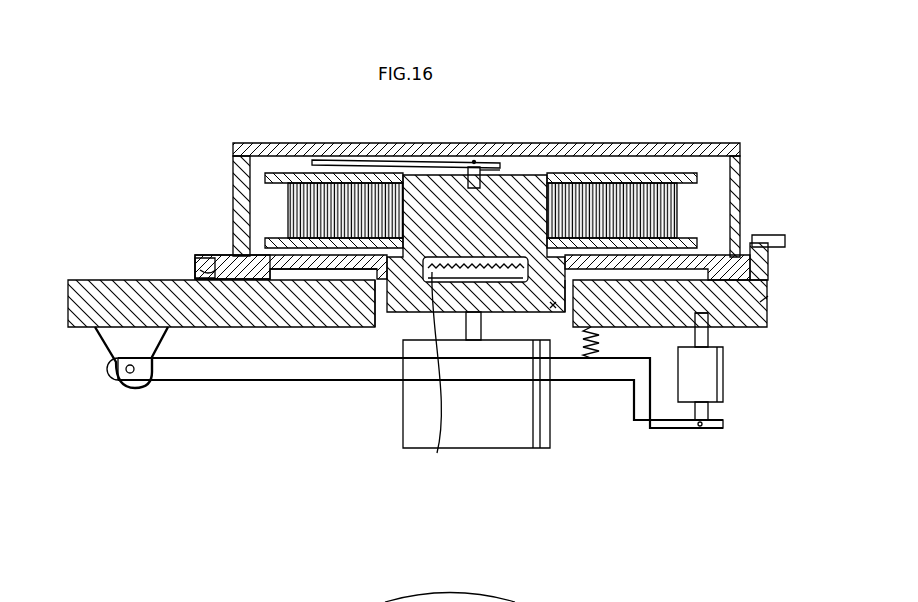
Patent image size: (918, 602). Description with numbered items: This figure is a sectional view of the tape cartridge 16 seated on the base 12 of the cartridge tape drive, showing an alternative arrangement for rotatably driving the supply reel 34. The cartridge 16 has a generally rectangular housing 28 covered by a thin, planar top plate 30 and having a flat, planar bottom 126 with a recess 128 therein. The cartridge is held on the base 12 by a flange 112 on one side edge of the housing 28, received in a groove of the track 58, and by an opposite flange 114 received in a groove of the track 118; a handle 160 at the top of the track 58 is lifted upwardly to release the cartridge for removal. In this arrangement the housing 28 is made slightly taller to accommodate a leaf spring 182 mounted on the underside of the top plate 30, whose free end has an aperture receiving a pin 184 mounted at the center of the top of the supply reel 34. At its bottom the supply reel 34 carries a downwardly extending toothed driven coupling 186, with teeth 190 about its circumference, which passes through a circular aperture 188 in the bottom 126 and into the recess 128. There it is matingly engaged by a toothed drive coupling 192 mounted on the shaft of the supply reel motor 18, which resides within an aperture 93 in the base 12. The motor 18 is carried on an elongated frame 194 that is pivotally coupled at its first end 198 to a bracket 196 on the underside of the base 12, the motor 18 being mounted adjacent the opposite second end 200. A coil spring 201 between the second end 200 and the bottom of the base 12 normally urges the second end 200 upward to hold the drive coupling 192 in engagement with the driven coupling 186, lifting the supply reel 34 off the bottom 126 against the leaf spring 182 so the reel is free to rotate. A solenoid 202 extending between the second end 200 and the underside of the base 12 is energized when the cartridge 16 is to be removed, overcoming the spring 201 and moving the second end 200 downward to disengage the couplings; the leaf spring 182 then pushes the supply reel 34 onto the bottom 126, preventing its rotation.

The base 12 is at (108, 283).
The tape cartridge 16 is at (485, 187).
The supply reel motor 18 is at (527, 436).
The housing 28 is at (742, 176).
The top plate 30 is at (274, 142).
The supply reel 34 is at (633, 176).
The track 58 is at (770, 262).
The opening 93 is at (376, 327).
The flange 112 is at (781, 305).
The flange 114 is at (196, 268).
The track 118 is at (207, 256).
The bottom 126 is at (688, 262).
The recess 128 is at (718, 320).
The handle 160 is at (760, 235).
The leaf spring 182 is at (436, 162).
The pin 184 is at (487, 166).
The toothed driven coupling 186 is at (427, 275).
The circular aperture 188 is at (368, 282).
The teeth 190 is at (508, 262).
The toothed drive coupling 192 is at (555, 306).
The elongated frame 194 is at (272, 362).
The bracket 196 is at (104, 354).
The first end 198 is at (158, 374).
The second end 200 is at (638, 428).
The coil spring 201 is at (598, 345).
The solenoid 202 is at (722, 380).